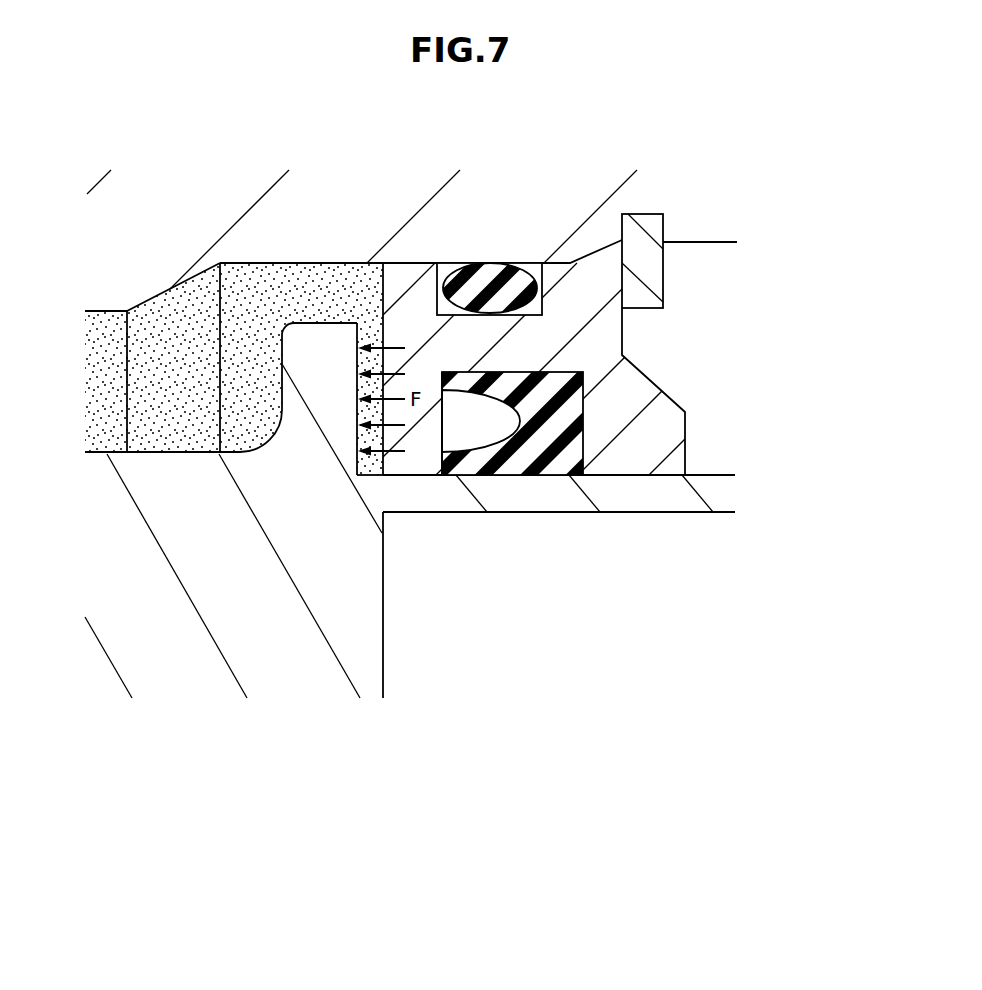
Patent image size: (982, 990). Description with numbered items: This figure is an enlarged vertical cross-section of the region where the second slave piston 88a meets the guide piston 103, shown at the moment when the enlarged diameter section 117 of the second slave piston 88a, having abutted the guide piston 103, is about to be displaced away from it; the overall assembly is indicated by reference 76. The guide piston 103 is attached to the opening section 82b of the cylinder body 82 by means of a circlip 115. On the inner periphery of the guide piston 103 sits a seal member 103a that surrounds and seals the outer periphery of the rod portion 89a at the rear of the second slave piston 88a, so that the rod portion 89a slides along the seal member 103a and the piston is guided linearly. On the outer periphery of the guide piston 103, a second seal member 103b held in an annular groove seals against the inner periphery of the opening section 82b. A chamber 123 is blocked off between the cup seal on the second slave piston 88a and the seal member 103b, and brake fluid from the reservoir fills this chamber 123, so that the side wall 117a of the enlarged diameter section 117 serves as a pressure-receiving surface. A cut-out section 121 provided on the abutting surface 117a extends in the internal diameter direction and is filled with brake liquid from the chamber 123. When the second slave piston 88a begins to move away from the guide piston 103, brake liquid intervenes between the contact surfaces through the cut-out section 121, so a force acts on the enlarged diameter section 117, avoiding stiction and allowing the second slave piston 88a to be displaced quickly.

The seal assembly 76 is at (746, 129).
The cylinder body 82 is at (552, 207).
The opening section 82b is at (307, 262).
The second slave piston 88a is at (212, 745).
The rod portion 89a is at (620, 512).
The guide piston 103 is at (600, 337).
The seal member 103a is at (560, 422).
The seal member 103b is at (485, 273).
The circlip 115 is at (640, 240).
The enlarged diameter section 117 is at (338, 323).
The abutting surface 117a is at (281, 379).
The cut-out section 121 is at (383, 323).
The chamber 123 is at (198, 378).